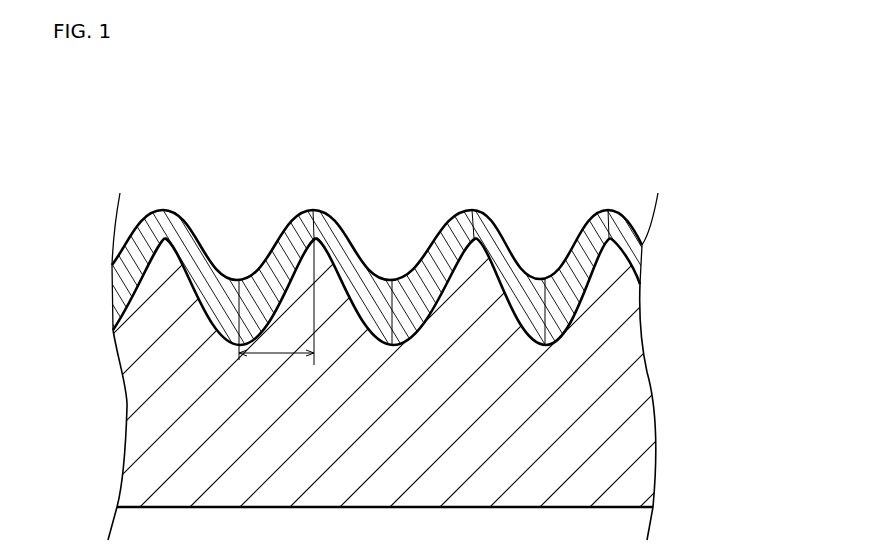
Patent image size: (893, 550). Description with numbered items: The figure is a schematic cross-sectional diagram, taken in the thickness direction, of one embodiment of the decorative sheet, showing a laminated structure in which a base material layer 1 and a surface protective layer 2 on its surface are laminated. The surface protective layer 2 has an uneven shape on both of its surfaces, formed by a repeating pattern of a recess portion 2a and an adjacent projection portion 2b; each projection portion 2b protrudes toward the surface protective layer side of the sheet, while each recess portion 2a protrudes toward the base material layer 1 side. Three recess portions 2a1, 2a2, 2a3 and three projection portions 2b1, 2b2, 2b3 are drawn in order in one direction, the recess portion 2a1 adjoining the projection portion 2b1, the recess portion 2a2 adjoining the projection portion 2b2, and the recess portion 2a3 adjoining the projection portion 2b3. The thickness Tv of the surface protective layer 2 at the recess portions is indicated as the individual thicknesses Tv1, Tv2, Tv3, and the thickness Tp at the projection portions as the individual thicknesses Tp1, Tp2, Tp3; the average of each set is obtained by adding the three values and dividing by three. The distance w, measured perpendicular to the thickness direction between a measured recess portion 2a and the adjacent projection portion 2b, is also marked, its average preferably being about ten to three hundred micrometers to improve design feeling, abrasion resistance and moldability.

The base material layer 1 is at (655, 400).
The surface protective layer 2 is at (383, 235).
The recess portion 2a is at (387, 280).
The recess portion 2a1 is at (243, 280).
The recess portion 2a2 is at (398, 276).
The recess portion 2a3 is at (547, 278).
The projection portion 2b is at (467, 205).
The projection portion 2b1 is at (314, 210).
The projection portion 2b2 is at (474, 210).
The projection portion 2b3 is at (610, 210).
The thickness of projection portion of surface protective layer Tp is at (453, 167).
The thickness of projection portion Tp1 is at (310, 211).
The thickness of projection portion Tp2 is at (470, 211).
The thickness of projection portion Tp3 is at (606, 211).
The thickness of recess portion of surface protective layer Tv is at (374, 257).
The thickness of recess portion Tv1 is at (220, 272).
The thickness of recess portion Tv2 is at (378, 276).
The thickness of recess portion Tv3 is at (525, 278).
The distance w is at (276, 306).